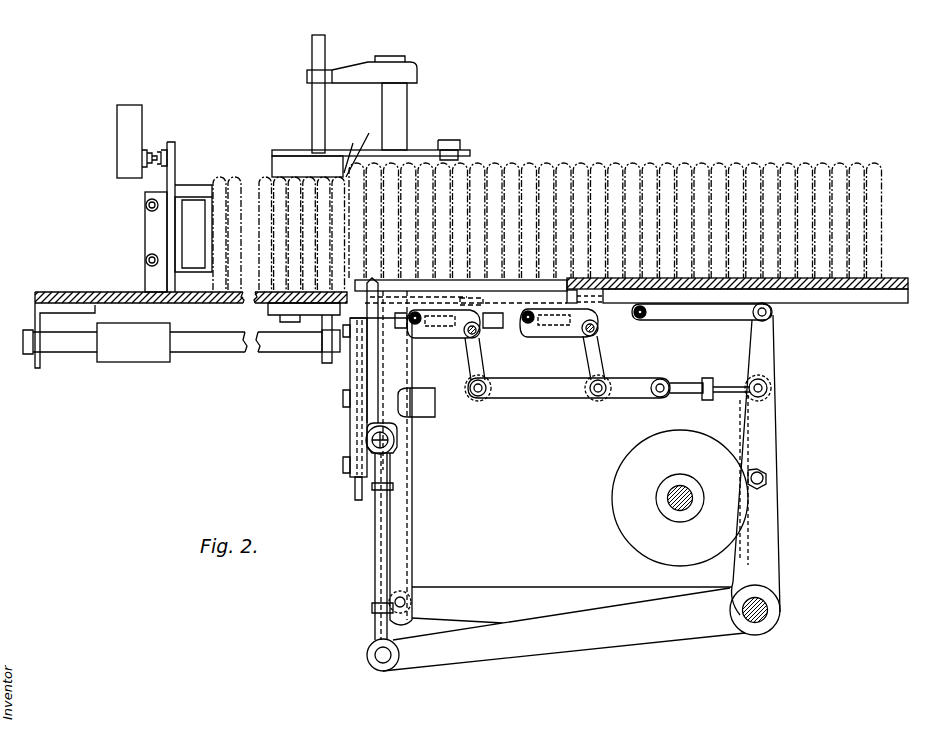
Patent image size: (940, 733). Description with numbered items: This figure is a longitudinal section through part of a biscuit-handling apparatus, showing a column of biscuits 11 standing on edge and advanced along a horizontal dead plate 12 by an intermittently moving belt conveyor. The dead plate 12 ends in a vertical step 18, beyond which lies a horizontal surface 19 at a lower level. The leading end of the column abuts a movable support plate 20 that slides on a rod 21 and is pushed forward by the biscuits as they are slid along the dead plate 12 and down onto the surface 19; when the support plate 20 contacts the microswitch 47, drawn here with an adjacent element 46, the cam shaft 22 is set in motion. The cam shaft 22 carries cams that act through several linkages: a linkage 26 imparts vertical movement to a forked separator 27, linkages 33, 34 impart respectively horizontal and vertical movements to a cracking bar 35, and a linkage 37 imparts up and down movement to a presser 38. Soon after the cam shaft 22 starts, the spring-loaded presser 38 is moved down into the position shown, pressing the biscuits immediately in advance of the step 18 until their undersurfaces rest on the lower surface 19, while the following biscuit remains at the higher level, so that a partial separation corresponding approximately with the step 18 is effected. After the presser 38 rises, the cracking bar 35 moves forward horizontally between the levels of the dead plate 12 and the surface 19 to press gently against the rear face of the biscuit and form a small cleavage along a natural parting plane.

The column of biscuits 11 is at (578, 165).
The dead plate 12 is at (895, 278).
The vertical step 18 is at (353, 288).
The horizontal surface 19 is at (256, 292).
The movable support plate 20 is at (205, 192).
The rod 21 is at (262, 350).
The cam shaft 22 is at (672, 494).
The linkage 26 is at (611, 645).
The forked separator 27 is at (357, 372).
The linkage 33 is at (752, 331).
The linkage 34 is at (578, 366).
The cracking bar 35 is at (513, 329).
The linkage 37 is at (405, 565).
The presser 38 is at (272, 160).
The knob 46 is at (157, 150).
The microswitch 47 is at (141, 108).